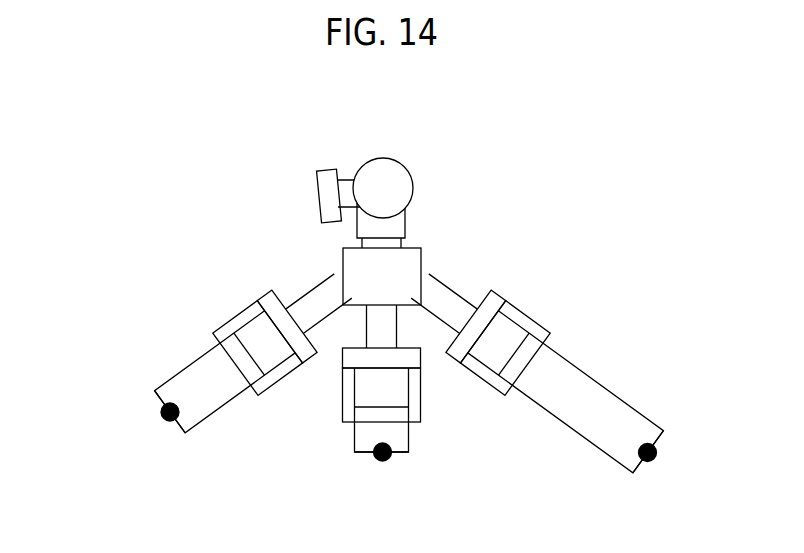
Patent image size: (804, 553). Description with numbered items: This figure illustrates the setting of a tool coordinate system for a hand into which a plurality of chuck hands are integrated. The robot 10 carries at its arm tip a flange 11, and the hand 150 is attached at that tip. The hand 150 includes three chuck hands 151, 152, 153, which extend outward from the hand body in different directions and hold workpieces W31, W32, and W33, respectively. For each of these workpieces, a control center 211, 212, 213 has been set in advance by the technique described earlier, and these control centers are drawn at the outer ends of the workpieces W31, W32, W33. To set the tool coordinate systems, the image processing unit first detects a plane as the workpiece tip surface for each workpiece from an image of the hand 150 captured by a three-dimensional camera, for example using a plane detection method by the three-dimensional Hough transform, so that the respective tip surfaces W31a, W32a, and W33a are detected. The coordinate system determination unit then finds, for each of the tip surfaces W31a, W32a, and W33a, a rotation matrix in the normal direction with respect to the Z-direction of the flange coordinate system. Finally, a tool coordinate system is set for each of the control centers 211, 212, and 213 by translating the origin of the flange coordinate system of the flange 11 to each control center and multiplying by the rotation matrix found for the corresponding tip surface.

The robot 10 is at (323, 169).
The flange 11 is at (407, 240).
The hand 150 is at (422, 265).
The chuck hand 151 is at (244, 310).
The chuck hand 152 is at (343, 390).
The chuck hand 153 is at (527, 316).
The workpiece W31 is at (197, 425).
The workpiece W32 is at (409, 432).
The workpiece W33 is at (618, 398).
The tip surface W31a is at (161, 404).
The tip surface W32a is at (375, 458).
The tip surface W33a is at (657, 444).
The control center 211 is at (163, 421).
The control center 212 is at (385, 461).
The control center 213 is at (654, 460).